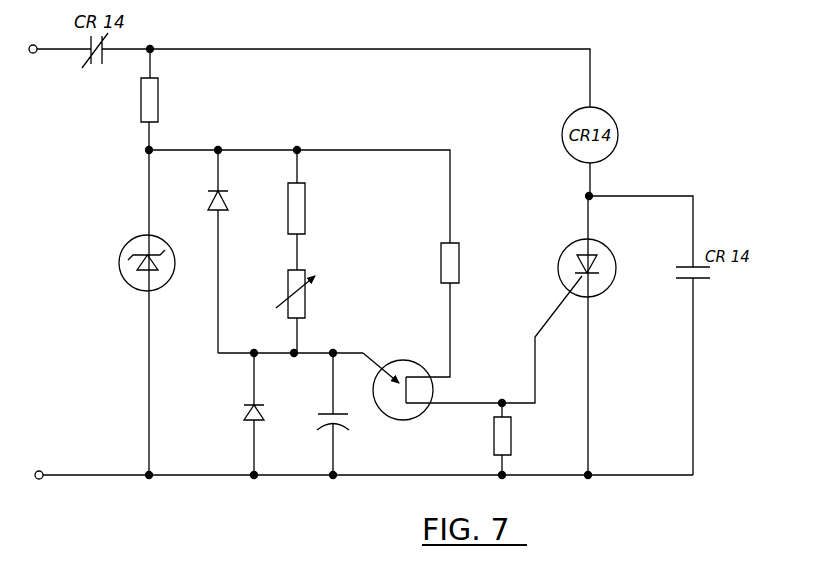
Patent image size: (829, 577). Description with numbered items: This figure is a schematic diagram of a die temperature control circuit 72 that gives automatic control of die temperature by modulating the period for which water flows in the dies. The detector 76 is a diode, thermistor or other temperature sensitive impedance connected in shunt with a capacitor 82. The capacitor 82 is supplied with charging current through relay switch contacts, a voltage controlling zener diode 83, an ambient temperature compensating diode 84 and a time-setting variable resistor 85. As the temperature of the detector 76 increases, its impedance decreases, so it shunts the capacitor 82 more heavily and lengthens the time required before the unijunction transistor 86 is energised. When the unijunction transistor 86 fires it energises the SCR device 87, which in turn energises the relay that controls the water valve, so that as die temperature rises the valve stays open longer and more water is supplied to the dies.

The control circuit 72 is at (72, 568).
The detector 76 is at (245, 415).
The capacitor 82 is at (343, 425).
The zener diode 83 is at (125, 287).
The ambient temperature compensating diode 84 is at (230, 201).
The time-setting variable resistor 85 is at (292, 288).
The unijunction transistor 86 is at (404, 360).
The SCR device 87 is at (610, 285).